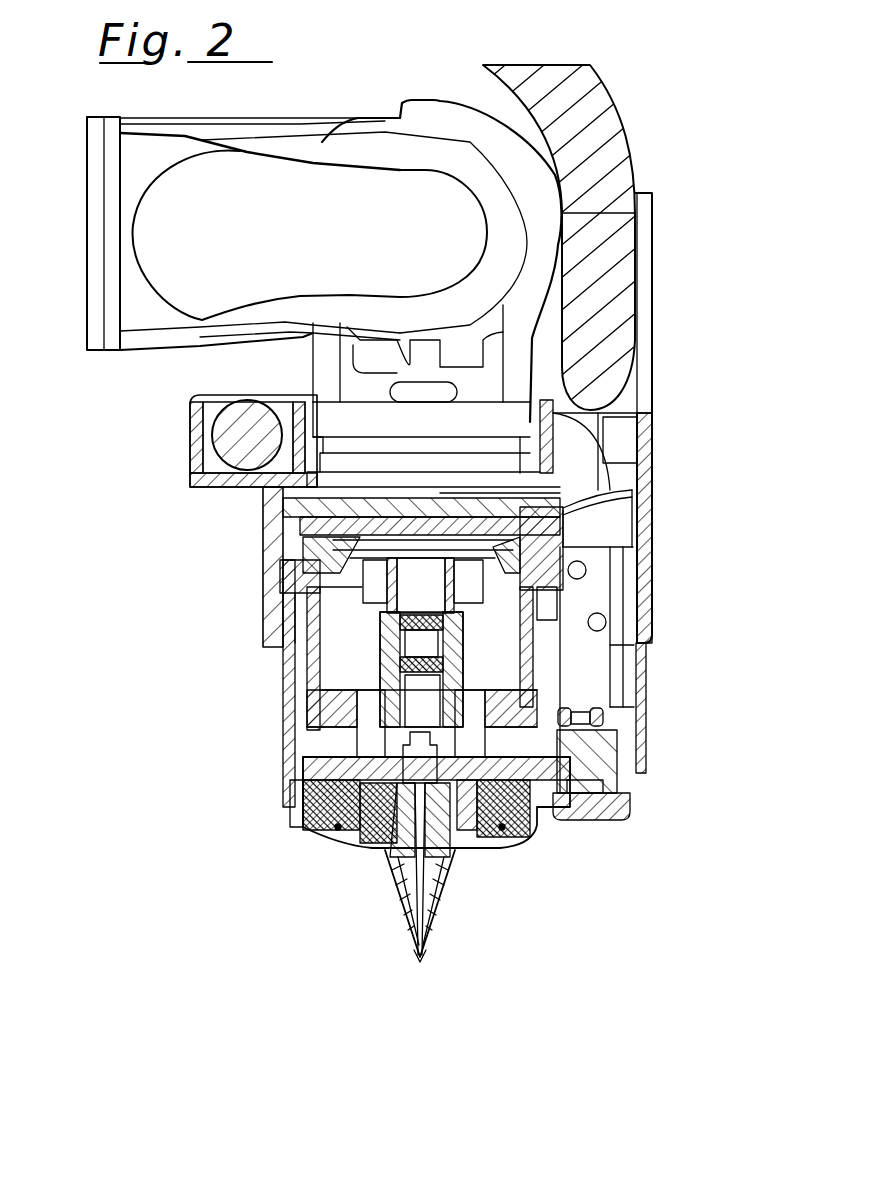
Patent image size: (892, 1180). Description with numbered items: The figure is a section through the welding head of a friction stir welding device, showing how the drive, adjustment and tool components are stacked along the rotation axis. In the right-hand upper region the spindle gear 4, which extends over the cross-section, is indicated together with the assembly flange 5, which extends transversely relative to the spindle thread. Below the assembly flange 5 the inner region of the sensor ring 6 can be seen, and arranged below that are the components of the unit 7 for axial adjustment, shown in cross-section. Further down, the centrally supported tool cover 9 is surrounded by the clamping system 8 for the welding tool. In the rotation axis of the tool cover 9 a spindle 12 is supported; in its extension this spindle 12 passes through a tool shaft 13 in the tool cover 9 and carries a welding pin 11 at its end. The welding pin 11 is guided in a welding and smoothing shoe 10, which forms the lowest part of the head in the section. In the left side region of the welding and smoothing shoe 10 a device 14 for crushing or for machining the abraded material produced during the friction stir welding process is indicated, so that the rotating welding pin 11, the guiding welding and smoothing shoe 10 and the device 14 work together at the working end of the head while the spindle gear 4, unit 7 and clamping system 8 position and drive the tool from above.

The spindle gear 4 is at (490, 657).
The spindle 12 is at (440, 722).
The assembly flange 5 is at (487, 772).
The sensor ring 6 is at (547, 773).
The unit for axial adjustment 7 is at (543, 803).
The clamping system 8 is at (470, 838).
The tool shaft 13 is at (432, 853).
The tool cover 9 is at (450, 873).
The welding and smoothing shoe 10 is at (437, 927).
The device for crushing or for machining the abraded material 14 is at (445, 943).
The welding pin 11 is at (425, 960).